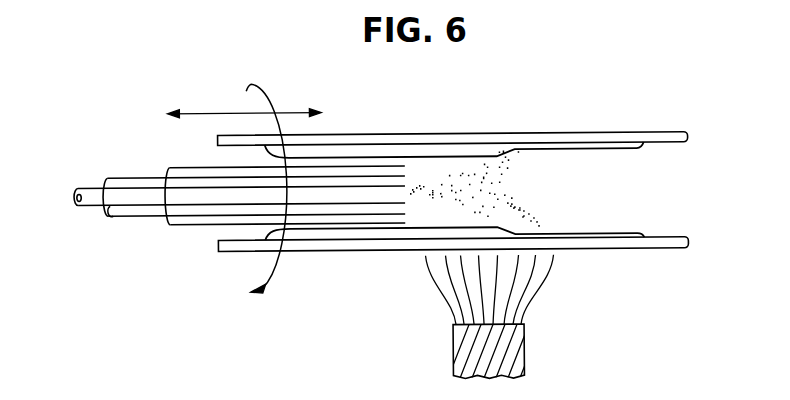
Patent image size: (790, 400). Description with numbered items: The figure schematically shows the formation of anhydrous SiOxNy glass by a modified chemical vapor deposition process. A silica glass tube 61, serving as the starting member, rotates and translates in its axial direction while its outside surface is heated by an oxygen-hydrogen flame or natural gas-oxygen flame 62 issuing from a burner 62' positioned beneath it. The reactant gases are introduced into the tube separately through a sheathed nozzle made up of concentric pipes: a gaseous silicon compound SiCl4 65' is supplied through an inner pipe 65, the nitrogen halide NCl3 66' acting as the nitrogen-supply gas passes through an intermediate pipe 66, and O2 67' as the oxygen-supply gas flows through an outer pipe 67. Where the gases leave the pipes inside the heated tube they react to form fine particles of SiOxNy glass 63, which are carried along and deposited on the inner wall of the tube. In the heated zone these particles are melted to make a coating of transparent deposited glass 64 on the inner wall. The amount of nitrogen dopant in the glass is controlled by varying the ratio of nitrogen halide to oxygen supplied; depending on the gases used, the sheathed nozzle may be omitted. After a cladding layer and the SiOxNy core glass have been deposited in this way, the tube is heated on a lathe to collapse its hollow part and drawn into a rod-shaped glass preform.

The silica glass tube 61 is at (646, 133).
The oxygen-hydrogen flame 62 is at (472, 291).
The burner 62' is at (512, 357).
The fine particles of SiOxNy glass 63 is at (508, 180).
The deposited glass 64 is at (452, 152).
The starting gas supplying pipe 65 is at (242, 227).
The SiCl4 65' is at (57, 201).
The starting gas supplying pipe 66 is at (257, 221).
The NCl3 66' is at (93, 184).
The starting gas supplying pipe 67 is at (288, 216).
The O2 67' is at (153, 178).